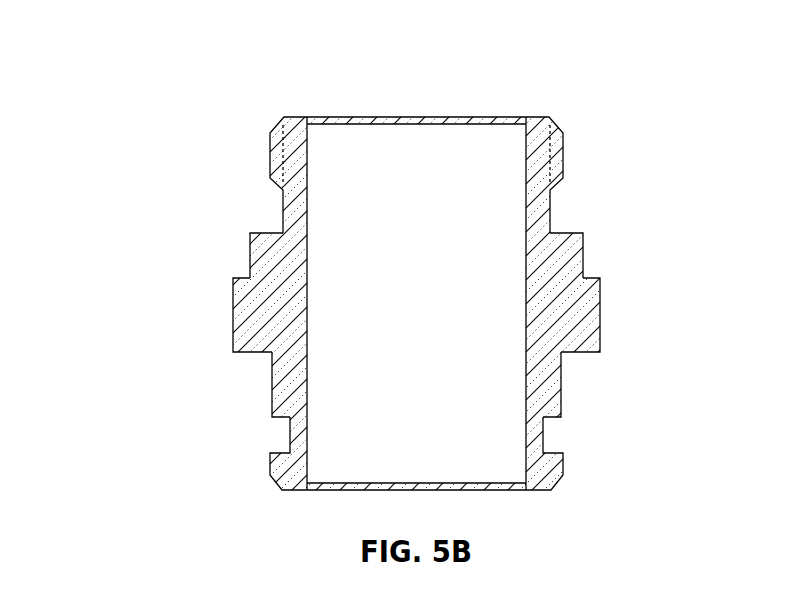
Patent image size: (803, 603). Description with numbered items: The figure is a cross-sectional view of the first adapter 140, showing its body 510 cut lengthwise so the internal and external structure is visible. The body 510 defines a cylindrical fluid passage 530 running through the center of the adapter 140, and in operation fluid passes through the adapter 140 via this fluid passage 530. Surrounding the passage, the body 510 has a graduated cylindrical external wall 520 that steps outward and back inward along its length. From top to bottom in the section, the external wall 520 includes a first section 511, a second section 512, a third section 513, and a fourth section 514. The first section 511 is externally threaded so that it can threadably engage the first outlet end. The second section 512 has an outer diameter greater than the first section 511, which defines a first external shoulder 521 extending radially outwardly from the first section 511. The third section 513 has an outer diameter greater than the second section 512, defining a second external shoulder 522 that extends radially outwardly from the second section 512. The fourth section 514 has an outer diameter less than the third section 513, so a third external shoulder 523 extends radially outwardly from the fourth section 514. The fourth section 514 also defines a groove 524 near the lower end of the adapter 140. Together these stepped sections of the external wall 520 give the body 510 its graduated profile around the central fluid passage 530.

The first adapter 140 is at (240, 74).
The body 510 is at (288, 322).
The cylindrical fluid passage 530 is at (347, 160).
The first section 511 is at (540, 160).
The second section 512 is at (585, 263).
The third section 513 is at (602, 317).
The fourth section 514 is at (563, 393).
The graduated cylindrical external wall 520 is at (233, 320).
The first external shoulder 521 is at (265, 232).
The second external shoulder 522 is at (243, 278).
The third external shoulder 523 is at (255, 355).
The groove 524 is at (270, 446).